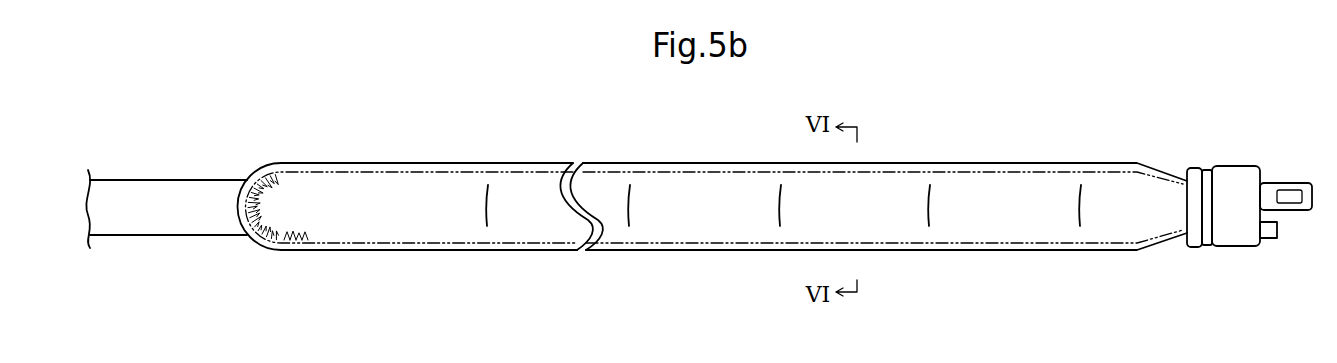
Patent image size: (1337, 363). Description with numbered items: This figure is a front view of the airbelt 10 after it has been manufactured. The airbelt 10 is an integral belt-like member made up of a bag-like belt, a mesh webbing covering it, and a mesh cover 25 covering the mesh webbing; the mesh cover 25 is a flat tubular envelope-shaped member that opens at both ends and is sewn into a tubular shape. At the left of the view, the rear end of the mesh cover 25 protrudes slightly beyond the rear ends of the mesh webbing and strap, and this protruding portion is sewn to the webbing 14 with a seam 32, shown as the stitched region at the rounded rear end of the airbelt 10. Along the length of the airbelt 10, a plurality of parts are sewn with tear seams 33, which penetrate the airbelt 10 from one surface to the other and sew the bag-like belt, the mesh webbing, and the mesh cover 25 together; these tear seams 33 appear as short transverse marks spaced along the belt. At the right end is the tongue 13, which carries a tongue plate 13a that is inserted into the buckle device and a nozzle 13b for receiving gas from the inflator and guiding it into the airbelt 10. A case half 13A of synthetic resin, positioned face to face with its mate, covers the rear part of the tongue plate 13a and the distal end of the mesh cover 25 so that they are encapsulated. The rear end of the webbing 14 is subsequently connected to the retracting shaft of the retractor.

The airbelt 10 is at (713, 169).
The webbing 14 is at (163, 190).
The mesh cover 25 is at (742, 163).
The seam 32 is at (287, 175).
The tear seam 33 is at (1099, 209).
The tongue 13 is at (1251, 196).
The case half 13A is at (1232, 233).
The tongue plate 13a is at (1298, 183).
The nozzle 13b is at (1271, 239).